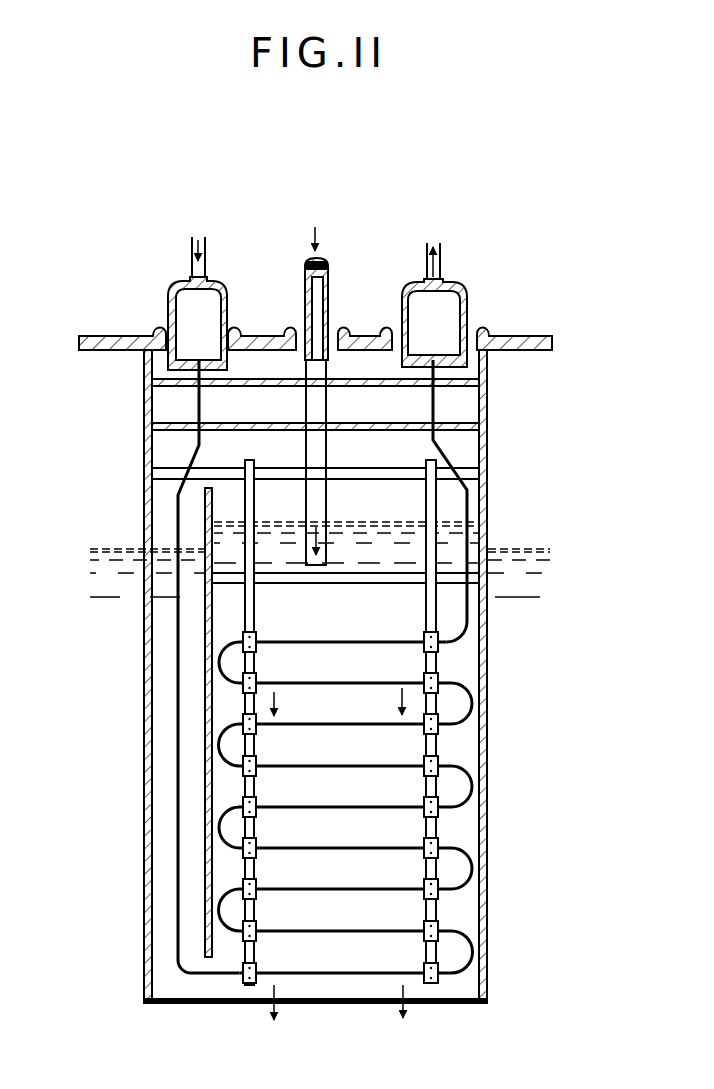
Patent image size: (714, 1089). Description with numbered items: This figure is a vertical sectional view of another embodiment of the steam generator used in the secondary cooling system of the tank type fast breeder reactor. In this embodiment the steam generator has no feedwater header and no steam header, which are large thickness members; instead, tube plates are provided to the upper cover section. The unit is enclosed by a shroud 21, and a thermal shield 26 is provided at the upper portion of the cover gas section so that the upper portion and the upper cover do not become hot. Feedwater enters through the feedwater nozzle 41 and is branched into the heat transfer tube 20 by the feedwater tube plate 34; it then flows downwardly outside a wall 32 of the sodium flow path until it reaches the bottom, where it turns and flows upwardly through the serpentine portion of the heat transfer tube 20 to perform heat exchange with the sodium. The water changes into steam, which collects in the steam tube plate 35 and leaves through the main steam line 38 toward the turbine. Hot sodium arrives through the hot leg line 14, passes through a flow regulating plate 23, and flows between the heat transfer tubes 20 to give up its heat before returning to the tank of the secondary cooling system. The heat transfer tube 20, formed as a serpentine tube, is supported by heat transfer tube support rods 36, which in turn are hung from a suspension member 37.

The hot leg line 14 is at (328, 302).
The heat transfer tube 20 is at (200, 976).
The shroud 21 is at (488, 898).
The flow regulating plate 23 is at (363, 585).
The thermal shield 26 is at (165, 438).
The wall of flow path of sodium 32 is at (203, 633).
The feedwater tube plate 34 is at (195, 343).
The steam tube plate 35 is at (425, 353).
The heat transfer tube support rod 36 is at (438, 745).
The suspension member 37 is at (463, 467).
The main steam line 38 is at (442, 263).
The feedwater nozzle 41 is at (205, 263).